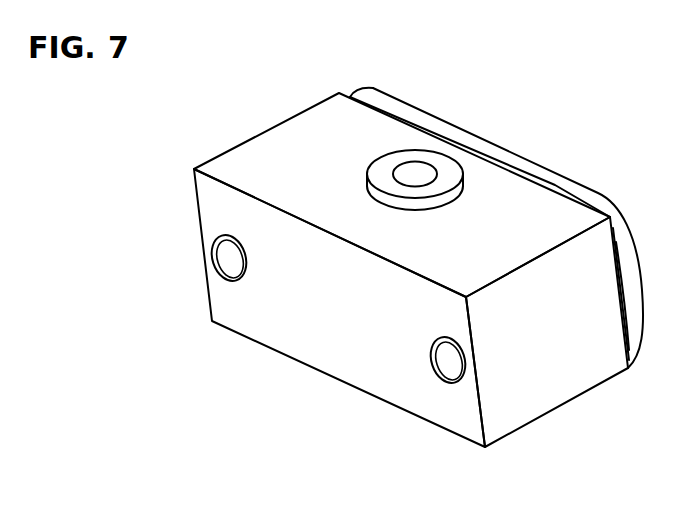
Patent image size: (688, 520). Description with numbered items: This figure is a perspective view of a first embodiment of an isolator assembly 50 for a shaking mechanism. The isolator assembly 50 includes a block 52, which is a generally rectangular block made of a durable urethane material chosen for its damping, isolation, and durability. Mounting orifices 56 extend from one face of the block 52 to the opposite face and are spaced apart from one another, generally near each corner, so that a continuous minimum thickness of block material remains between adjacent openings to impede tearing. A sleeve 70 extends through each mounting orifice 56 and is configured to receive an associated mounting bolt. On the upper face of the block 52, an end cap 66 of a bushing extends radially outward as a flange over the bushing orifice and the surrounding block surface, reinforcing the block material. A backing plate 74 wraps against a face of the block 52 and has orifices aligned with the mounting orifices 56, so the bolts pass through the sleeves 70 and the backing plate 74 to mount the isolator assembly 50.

The isolator assembly 50 is at (292, 384).
The block 52 is at (543, 405).
The mounting orifices 56 is at (222, 243).
The end cap 66 is at (456, 180).
The sleeve 70 is at (232, 270).
The backing plate 74 is at (433, 118).